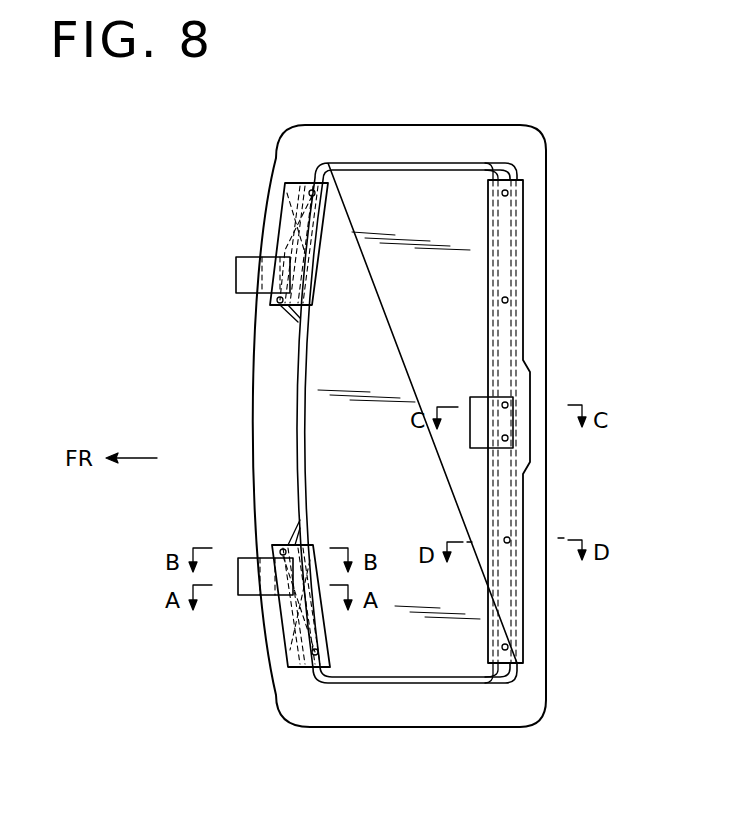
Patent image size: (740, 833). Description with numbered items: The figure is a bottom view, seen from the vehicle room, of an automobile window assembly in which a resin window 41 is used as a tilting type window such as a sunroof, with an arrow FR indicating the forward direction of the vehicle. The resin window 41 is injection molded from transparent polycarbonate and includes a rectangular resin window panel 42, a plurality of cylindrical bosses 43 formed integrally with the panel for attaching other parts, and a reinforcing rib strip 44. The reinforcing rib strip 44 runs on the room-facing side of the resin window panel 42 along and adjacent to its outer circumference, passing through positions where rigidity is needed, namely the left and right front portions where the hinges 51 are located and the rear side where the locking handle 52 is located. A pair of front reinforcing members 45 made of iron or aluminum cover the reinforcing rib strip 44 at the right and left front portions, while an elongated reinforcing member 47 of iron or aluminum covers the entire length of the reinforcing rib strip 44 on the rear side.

The resin window 41 is at (480, 124).
The resin window panel 42 is at (418, 143).
The cylindrical bosses 43 is at (309, 193).
The reinforcing rib strip 44 is at (357, 165).
The front reinforcing members 45 is at (318, 287).
The reinforcing member 47 is at (525, 338).
The hinges 51 is at (236, 270).
The locking handle 52 is at (470, 397).